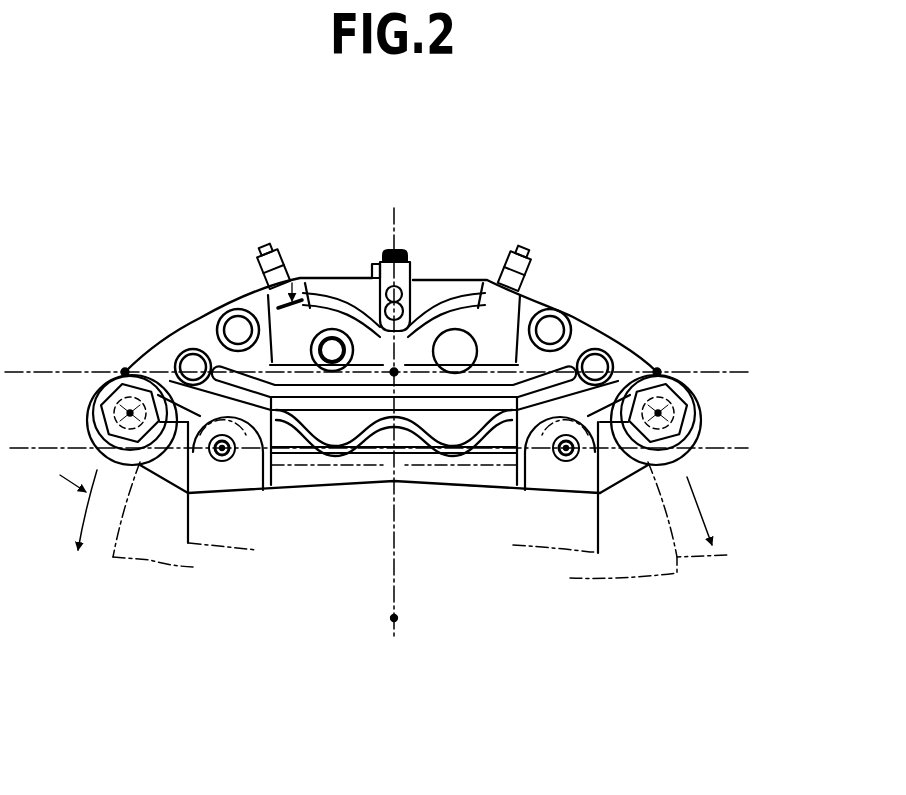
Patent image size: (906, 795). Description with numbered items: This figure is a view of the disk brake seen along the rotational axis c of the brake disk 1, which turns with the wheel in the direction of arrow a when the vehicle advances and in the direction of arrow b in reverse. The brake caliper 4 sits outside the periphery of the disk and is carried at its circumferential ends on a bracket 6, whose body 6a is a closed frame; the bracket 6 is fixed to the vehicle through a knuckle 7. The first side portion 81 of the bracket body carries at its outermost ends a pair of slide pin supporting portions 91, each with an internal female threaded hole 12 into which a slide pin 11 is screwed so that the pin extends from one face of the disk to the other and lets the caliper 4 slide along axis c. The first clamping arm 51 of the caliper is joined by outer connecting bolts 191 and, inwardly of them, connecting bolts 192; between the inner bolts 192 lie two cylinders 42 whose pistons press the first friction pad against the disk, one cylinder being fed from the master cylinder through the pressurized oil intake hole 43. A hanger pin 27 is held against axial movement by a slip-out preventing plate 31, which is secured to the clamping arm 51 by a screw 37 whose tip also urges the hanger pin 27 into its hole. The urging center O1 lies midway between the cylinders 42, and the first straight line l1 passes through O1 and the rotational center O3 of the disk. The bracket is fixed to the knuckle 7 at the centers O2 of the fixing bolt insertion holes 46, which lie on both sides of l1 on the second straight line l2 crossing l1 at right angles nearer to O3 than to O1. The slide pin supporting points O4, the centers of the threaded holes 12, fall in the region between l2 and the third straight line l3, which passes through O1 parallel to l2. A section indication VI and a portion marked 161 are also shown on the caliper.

The brake disk 1 is at (433, 556).
The brake caliper 4 is at (533, 286).
The bracket 6 is at (378, 485).
The body of the bracket 6a is at (493, 492).
The knuckle 7 is at (600, 537).
The slide pin 11 is at (124, 370).
The internal female threaded hole 12 is at (100, 397).
The hanger pin 27 is at (413, 278).
The slip-out preventing plate 31 is at (378, 255).
The screw 37 is at (388, 252).
The cylinder 42 is at (333, 425).
The pressurized oil intake hole 43 is at (331, 347).
The fixing bolt insertion hole 46 is at (394, 467).
The first clamping arm 51 is at (452, 288).
The first side portion 81 is at (290, 496).
The slide pin supporting portion 91 is at (137, 458).
The caliper housing 161 is at (210, 310).
The connecting bolt 191 is at (190, 363).
The connecting bolt 192 is at (235, 328).
The urging center O1 is at (393, 371).
The center of fixing bolt insertion hole O2 is at (222, 456).
The rotational center of the brake disk O3 is at (396, 615).
The slide pin supporting point O4 is at (126, 415).
The first straight line l1 is at (397, 218).
The second straight line l2 is at (745, 448).
The third straight line l3 is at (735, 371).
The section VI is at (172, 387).
The direction of arrow a is at (86, 522).
The direction of arrow b is at (700, 502).
The rotational axis c is at (392, 615).